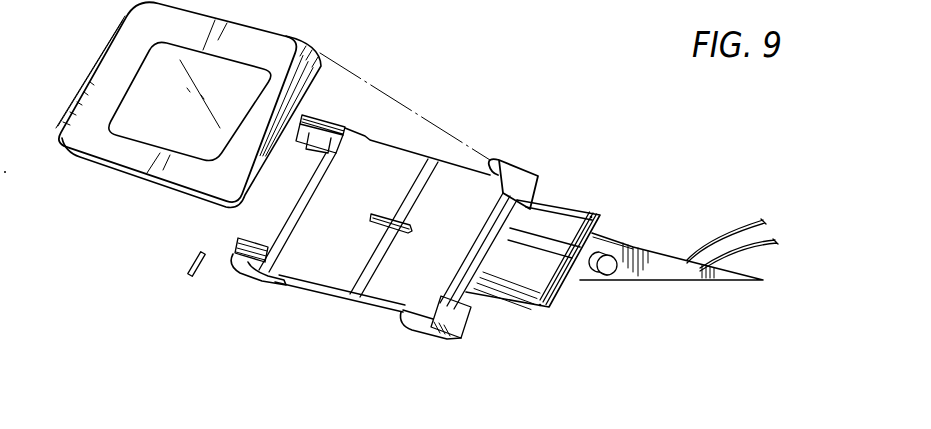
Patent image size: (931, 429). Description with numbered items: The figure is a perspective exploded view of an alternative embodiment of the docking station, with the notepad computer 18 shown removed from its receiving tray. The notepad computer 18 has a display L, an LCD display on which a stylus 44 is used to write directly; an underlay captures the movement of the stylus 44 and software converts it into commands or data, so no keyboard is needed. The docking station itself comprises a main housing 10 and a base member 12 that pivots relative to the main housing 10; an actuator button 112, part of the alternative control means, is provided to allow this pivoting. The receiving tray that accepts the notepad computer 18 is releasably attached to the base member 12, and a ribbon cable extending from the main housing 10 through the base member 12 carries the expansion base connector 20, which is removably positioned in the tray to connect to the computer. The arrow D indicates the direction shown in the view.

The notepad computer 18 is at (297, 44).
The display L is at (170, 128).
The expansion base connector 20 is at (397, 221).
The stylus 44 is at (203, 264).
The base member 12 is at (560, 220).
The main housing 10 is at (661, 257).
The actuator button 112 is at (607, 275).
The direction arrow D is at (617, 187).